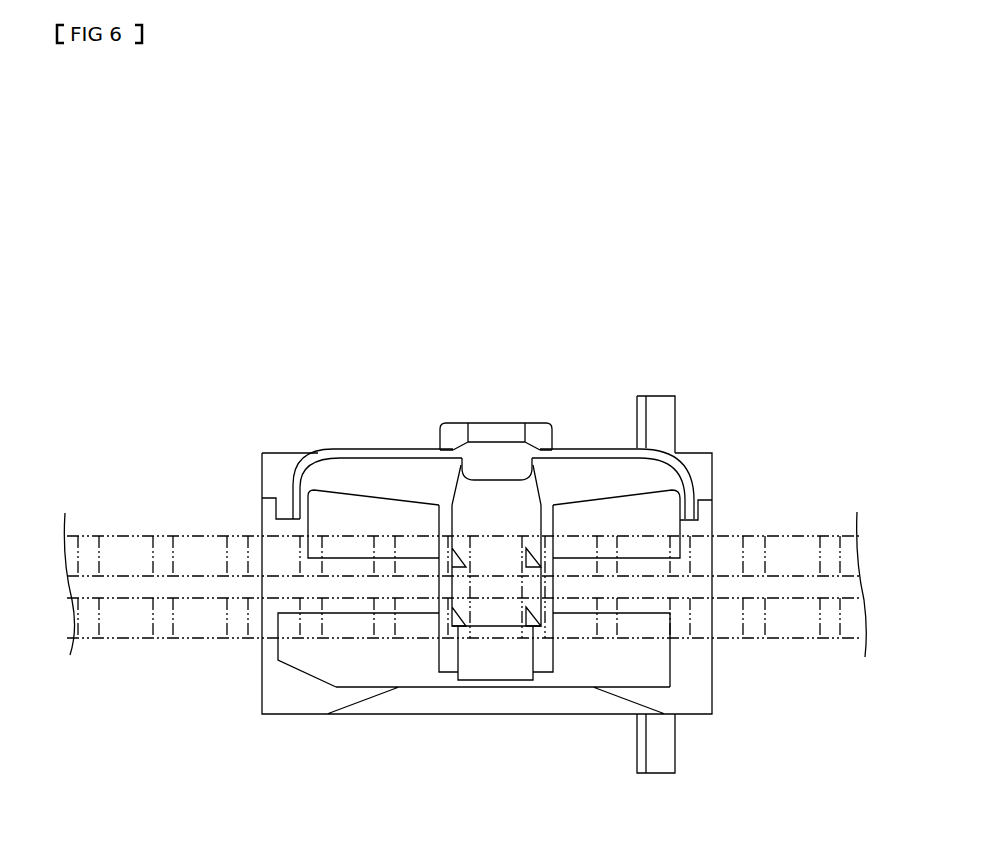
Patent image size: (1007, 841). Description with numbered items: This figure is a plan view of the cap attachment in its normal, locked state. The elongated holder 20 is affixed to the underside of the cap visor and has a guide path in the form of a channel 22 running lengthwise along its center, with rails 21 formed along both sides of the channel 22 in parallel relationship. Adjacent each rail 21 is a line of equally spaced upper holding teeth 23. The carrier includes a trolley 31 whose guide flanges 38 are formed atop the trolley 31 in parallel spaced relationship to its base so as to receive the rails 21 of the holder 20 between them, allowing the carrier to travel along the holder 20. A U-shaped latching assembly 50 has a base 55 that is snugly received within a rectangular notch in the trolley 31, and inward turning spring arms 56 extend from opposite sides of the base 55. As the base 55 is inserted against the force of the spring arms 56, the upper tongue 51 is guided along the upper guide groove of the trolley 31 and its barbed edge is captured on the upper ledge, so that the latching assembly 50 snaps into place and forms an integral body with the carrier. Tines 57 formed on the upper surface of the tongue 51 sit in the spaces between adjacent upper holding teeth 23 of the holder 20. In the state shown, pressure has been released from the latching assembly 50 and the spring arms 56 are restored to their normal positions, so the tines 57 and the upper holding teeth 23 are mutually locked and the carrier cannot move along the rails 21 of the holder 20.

The holder 20 is at (793, 538).
The rails 21 is at (827, 642).
The channel 22 is at (835, 587).
The upper holding teeth 23 is at (480, 635).
The trolley 31 is at (259, 700).
The guide flanges 38 is at (318, 523).
The latching assembly 50 is at (541, 419).
The upper tongue 51 is at (461, 514).
The base 55 is at (495, 422).
The spring arms 56 is at (615, 448).
The tines 57 is at (456, 624).